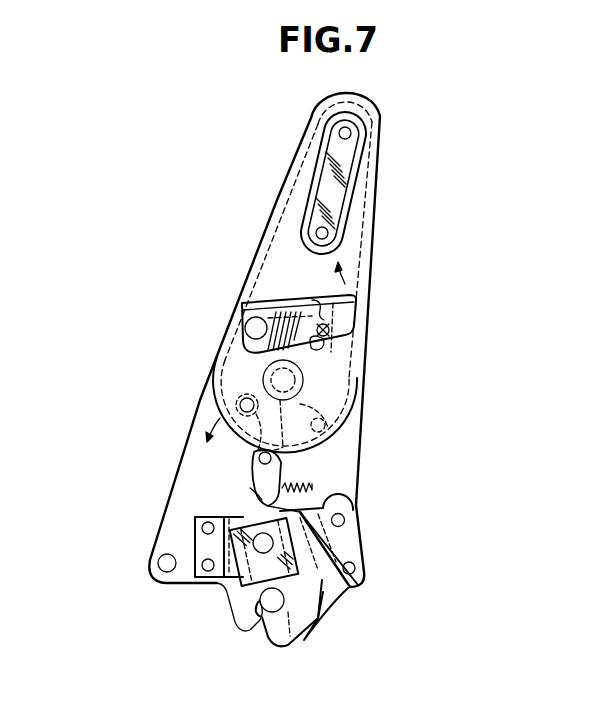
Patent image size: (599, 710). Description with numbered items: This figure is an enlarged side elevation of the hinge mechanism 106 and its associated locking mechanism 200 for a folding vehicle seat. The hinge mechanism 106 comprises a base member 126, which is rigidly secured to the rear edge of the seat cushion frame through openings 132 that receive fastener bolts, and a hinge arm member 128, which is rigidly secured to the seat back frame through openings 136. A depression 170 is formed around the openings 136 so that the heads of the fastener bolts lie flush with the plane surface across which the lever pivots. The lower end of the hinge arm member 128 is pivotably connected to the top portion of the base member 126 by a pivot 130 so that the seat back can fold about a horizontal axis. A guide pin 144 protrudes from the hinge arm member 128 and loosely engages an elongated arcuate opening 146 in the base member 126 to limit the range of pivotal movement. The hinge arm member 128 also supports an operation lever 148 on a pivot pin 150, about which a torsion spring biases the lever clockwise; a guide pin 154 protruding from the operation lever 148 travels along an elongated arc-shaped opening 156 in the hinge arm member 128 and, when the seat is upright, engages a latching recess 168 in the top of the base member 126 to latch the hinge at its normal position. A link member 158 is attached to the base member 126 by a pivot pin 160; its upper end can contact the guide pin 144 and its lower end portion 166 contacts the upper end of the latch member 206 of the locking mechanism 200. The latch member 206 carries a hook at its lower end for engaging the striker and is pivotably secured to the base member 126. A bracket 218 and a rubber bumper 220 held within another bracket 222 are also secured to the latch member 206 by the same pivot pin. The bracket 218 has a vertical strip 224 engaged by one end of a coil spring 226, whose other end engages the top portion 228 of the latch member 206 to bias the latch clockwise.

The hinge mechanism 106 is at (363, 390).
The base member 126 is at (356, 478).
The hinge arm member 128 is at (258, 250).
The pivot 130 is at (275, 383).
The openings 132 is at (166, 568).
The openings 136 is at (352, 137).
The guide pin 144 is at (239, 405).
The elongated arcuate opening 146 is at (332, 420).
The operation lever 148 is at (347, 321).
The pivot pin 150 is at (252, 328).
The guide pin 154 is at (331, 334).
The elongated arc-shaped opening 156 is at (316, 302).
The link member 158 is at (258, 460).
The pivot pin 160 is at (280, 464).
The lower end portion 166 is at (356, 540).
The latching recess 168 is at (320, 351).
The depression 170 is at (343, 173).
The locking mechanism 200 is at (152, 512).
The latch member 206 is at (197, 512).
The bracket 218 is at (323, 580).
The rubber bumper 220 is at (292, 596).
The bracket 222 is at (257, 582).
The vertical strip 224 is at (348, 512).
The coil spring 226 is at (283, 496).
The top portion 228 is at (250, 491).